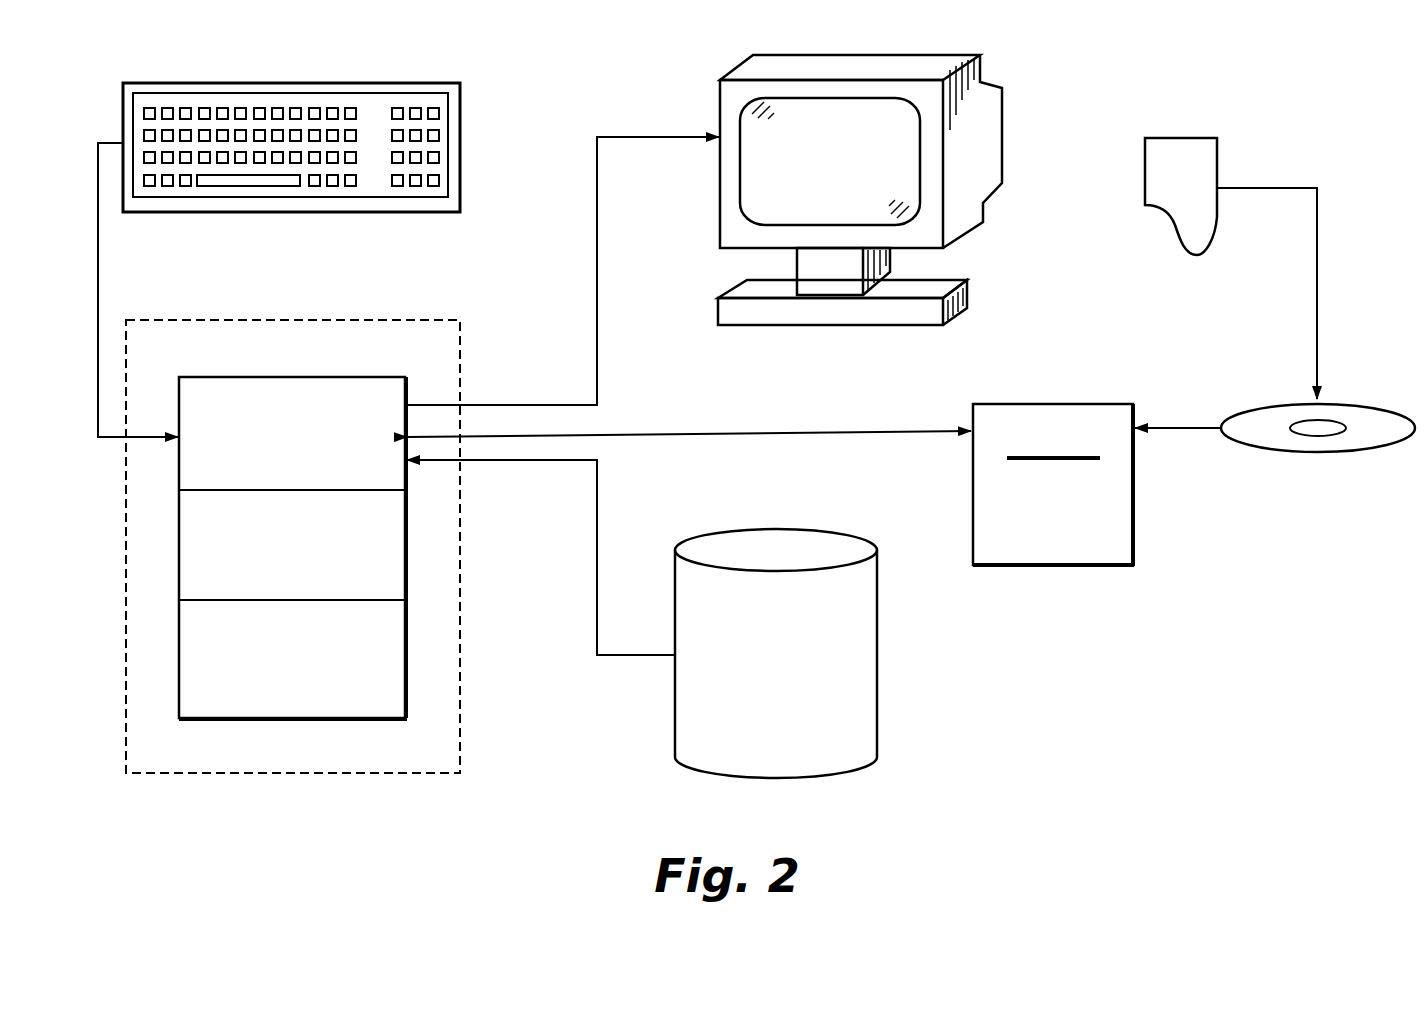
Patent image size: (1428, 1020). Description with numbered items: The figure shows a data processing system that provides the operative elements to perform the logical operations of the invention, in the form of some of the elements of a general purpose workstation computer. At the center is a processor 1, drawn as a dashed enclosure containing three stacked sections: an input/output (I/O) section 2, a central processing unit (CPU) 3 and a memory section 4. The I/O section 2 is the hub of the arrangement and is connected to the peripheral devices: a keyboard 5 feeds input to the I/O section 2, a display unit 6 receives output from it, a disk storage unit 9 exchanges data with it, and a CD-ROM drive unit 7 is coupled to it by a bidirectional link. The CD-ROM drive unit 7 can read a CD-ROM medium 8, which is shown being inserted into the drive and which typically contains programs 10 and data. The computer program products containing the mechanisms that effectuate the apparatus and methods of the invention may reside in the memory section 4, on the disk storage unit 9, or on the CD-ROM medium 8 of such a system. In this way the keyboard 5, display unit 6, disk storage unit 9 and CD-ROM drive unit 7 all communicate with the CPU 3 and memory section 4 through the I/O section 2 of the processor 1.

The processor 1 is at (410, 318).
The input/output (I/O) section 2 is at (270, 383).
The central processing unit (CPU) 3 is at (408, 563).
The memory section 4 is at (408, 700).
The keyboard 5 is at (437, 85).
The display unit 6 is at (927, 65).
The CD-ROM drive unit 7 is at (1003, 403).
The CD-ROM medium 8 is at (1290, 405).
The disk storage unit 9 is at (873, 625).
The programs 10 is at (1160, 148).